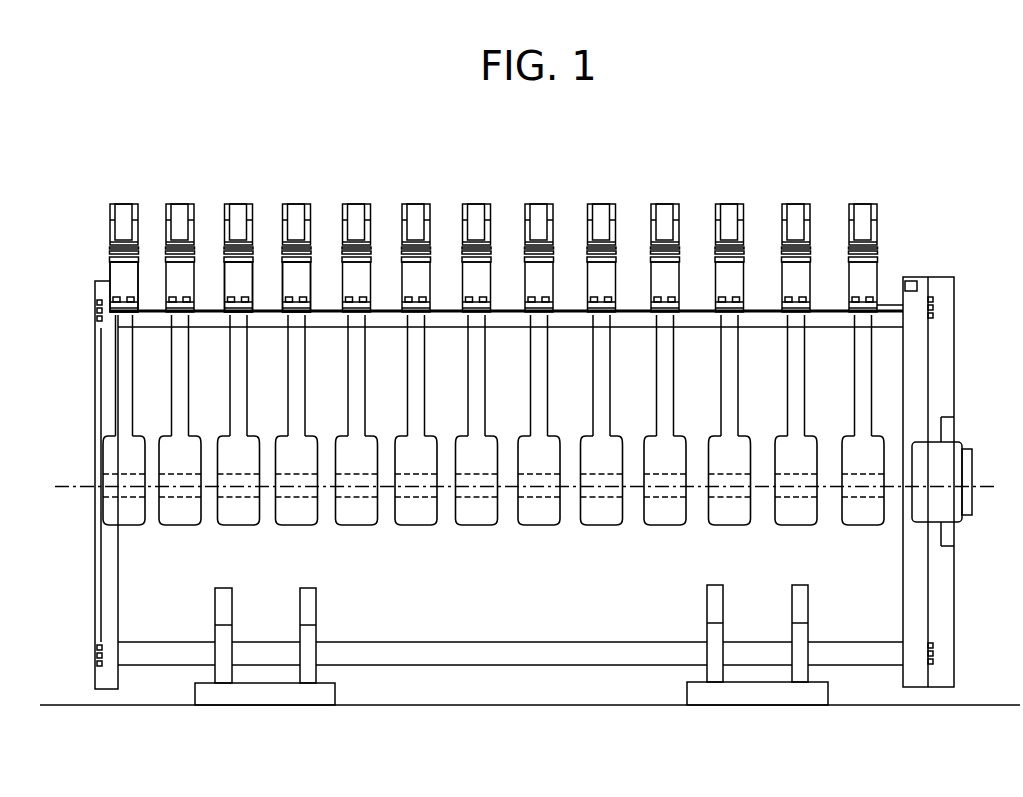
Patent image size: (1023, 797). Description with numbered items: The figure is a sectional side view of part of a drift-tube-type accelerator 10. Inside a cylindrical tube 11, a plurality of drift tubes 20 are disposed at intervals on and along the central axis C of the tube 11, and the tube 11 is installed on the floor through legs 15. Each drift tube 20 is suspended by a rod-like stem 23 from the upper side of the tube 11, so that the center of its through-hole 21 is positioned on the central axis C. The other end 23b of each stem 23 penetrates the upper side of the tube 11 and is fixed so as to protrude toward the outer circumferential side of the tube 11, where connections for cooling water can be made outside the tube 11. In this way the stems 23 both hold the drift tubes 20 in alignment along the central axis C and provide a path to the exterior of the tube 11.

The drift-tube-type accelerator 10 is at (900, 155).
The cylindrical tube 11 is at (890, 305).
The legs 15 is at (260, 693).
The drift tube 20 is at (514, 505).
The through-hole 21 is at (510, 397).
The stem 23 is at (479, 242).
The other end of the stem 23b is at (225, 317).
The central axis C is at (986, 478).